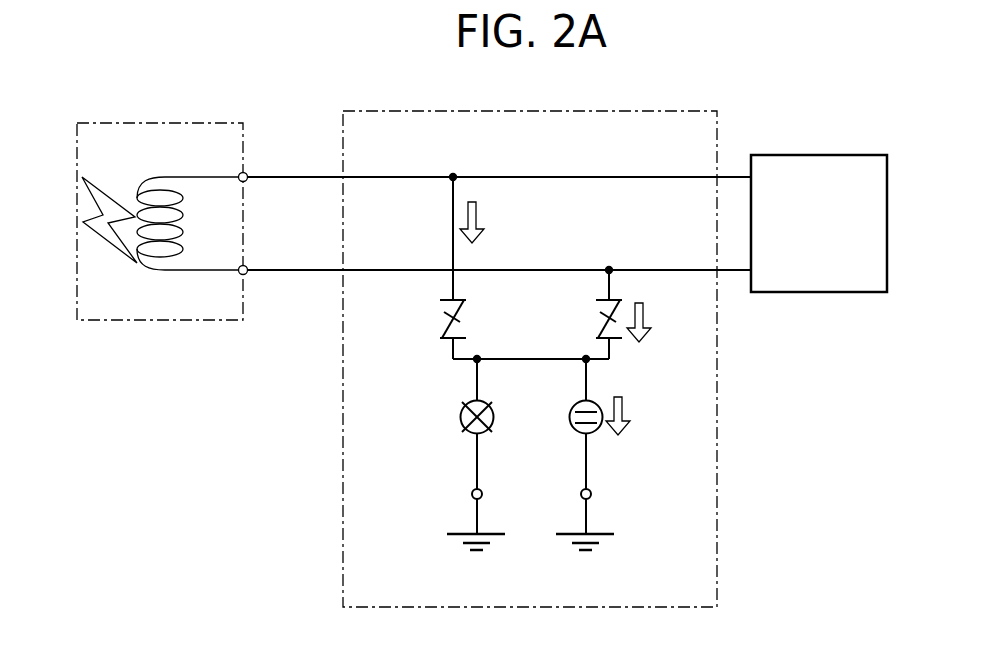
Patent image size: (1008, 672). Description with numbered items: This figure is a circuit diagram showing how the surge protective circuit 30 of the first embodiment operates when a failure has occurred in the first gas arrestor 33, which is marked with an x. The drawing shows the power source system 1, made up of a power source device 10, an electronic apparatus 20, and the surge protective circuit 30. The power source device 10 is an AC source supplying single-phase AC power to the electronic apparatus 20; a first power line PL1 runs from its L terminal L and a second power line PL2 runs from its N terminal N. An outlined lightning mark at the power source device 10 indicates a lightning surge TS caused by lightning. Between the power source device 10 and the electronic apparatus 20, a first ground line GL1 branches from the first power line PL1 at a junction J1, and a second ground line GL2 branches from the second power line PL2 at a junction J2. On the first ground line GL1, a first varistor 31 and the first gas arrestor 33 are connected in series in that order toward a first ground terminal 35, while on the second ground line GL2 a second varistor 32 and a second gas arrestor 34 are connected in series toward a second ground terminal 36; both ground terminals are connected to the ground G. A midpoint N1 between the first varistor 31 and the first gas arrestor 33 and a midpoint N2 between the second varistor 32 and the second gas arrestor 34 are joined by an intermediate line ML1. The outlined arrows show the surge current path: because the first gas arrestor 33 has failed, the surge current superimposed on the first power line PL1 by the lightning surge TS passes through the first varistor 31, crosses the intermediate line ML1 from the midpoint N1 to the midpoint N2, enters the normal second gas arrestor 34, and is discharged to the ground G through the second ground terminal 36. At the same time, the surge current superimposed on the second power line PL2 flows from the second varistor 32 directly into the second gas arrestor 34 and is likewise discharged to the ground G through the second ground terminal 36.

The power source system 1 is at (791, 66).
The power source device 10 is at (148, 123).
The electronic apparatus 20 is at (843, 155).
The surge protective circuit 30 is at (612, 111).
The first varistor 31 is at (440, 300).
The second varistor 32 is at (616, 300).
The first gas arrestor 33 is at (466, 432).
The second gas arrestor 34 is at (600, 432).
The first ground terminal 35 is at (472, 494).
The second ground terminal 36 is at (591, 494).
The lightning surge TS is at (93, 229).
The L terminal L is at (247, 175).
The N terminal N is at (247, 273).
The first power line PL1 is at (305, 176).
The second power line PL2 is at (305, 269).
The junction J1 is at (456, 176).
The junction J2 is at (612, 269).
The first ground line GL1 is at (448, 347).
The second ground line GL2 is at (614, 348).
The intermediate line ML1 is at (527, 358).
The midpoint N1 is at (474, 362).
The midpoint N2 is at (589, 362).
The ground G is at (531, 536).